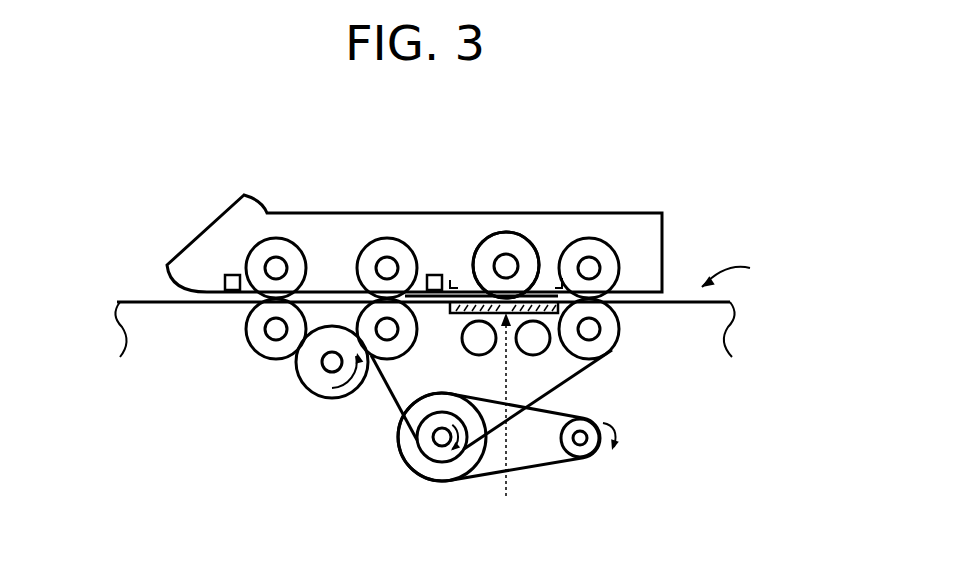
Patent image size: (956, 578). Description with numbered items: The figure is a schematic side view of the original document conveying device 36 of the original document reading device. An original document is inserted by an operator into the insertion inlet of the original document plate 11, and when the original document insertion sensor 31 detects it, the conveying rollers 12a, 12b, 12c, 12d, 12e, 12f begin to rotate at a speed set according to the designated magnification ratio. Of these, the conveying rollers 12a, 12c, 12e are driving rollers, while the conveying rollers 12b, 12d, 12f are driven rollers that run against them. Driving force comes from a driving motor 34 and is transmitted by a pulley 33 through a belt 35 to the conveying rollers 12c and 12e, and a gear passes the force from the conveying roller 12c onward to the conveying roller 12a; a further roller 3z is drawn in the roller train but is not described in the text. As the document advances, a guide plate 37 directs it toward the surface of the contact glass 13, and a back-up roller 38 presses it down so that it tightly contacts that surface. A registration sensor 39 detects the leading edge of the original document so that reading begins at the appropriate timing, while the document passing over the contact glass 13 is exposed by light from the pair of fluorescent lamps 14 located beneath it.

The original document plate 11 is at (140, 297).
The conveying roller 12a is at (249, 343).
The conveying roller 12b is at (273, 249).
The conveying roller 12c is at (387, 358).
The conveying roller 12d is at (384, 250).
The conveying roller 12e is at (620, 330).
The conveying roller 12f is at (590, 238).
The contact glass 13 is at (547, 297).
The fluorescent lamps 14 is at (480, 355).
The original document insertion sensor 31 is at (232, 275).
The pulley 33 is at (432, 473).
The driving motor 34 is at (598, 445).
The belt 35 is at (527, 412).
The original document conveying device 36 is at (753, 261).
The guide plate 37 is at (460, 290).
The back-up roller 38 is at (520, 247).
The registration sensor 39 is at (442, 277).
The drive roller 3z is at (304, 385).